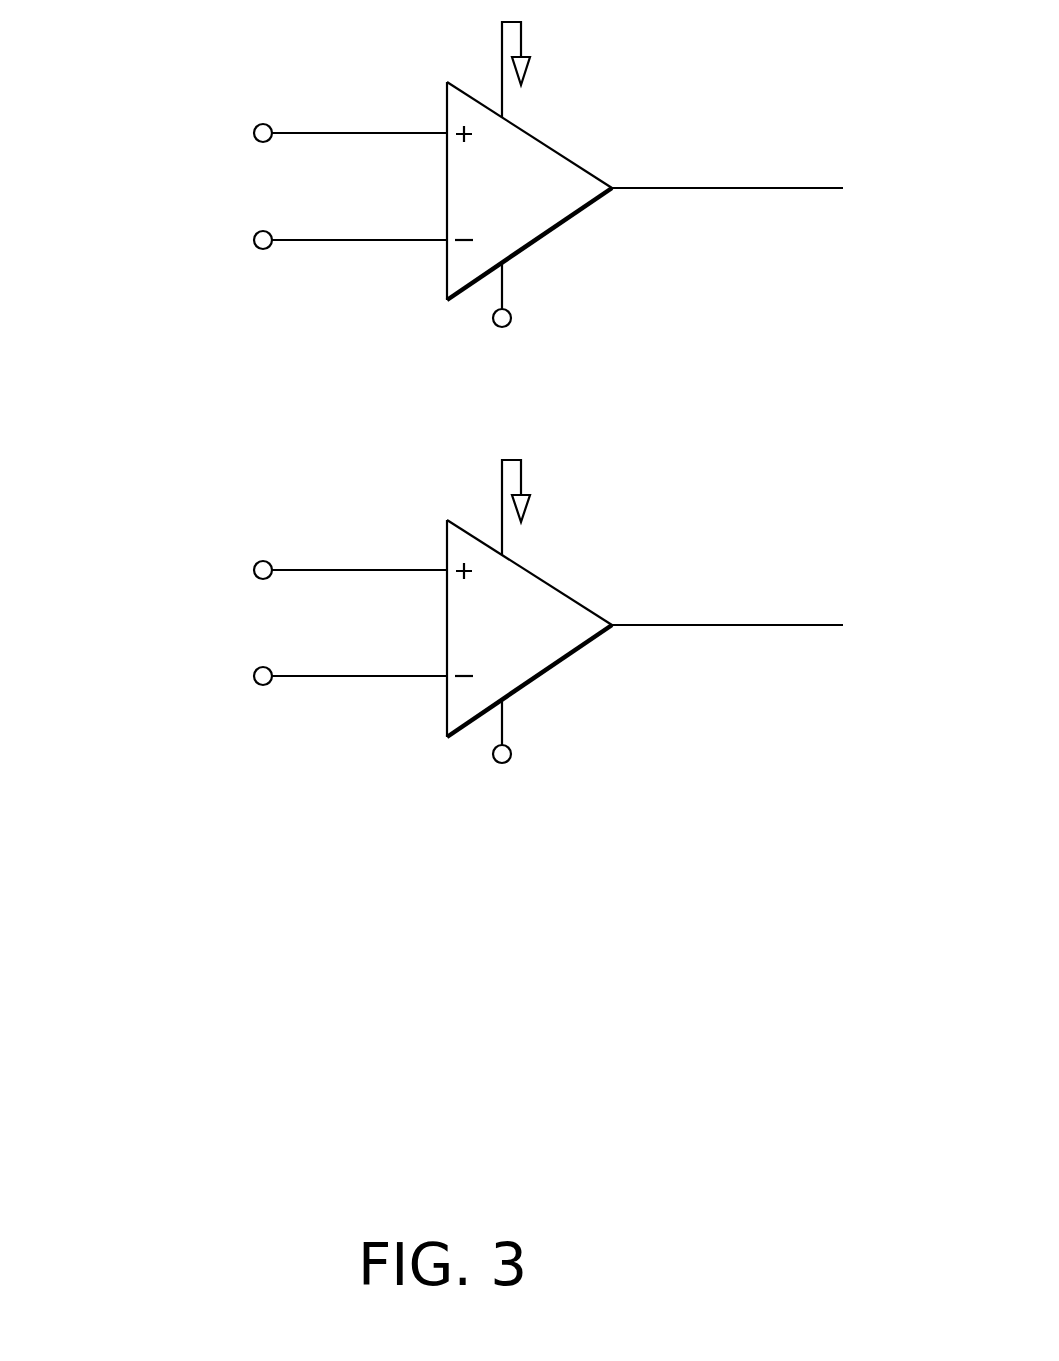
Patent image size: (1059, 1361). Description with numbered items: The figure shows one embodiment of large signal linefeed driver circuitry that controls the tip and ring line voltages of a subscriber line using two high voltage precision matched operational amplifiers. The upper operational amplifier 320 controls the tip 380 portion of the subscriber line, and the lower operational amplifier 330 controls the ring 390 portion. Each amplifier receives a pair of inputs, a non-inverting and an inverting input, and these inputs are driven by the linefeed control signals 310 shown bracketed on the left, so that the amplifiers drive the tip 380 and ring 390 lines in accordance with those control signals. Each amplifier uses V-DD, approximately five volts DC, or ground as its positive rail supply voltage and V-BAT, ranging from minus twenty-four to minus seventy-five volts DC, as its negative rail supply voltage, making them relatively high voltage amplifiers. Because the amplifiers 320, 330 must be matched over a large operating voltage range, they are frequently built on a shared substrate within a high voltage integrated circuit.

The linefeed control signals 310 is at (144, 518).
The operational amplifier 320 is at (447, 186).
The operational amplifier 330 is at (447, 623).
The tip 380 is at (727, 153).
The ring 390 is at (727, 590).